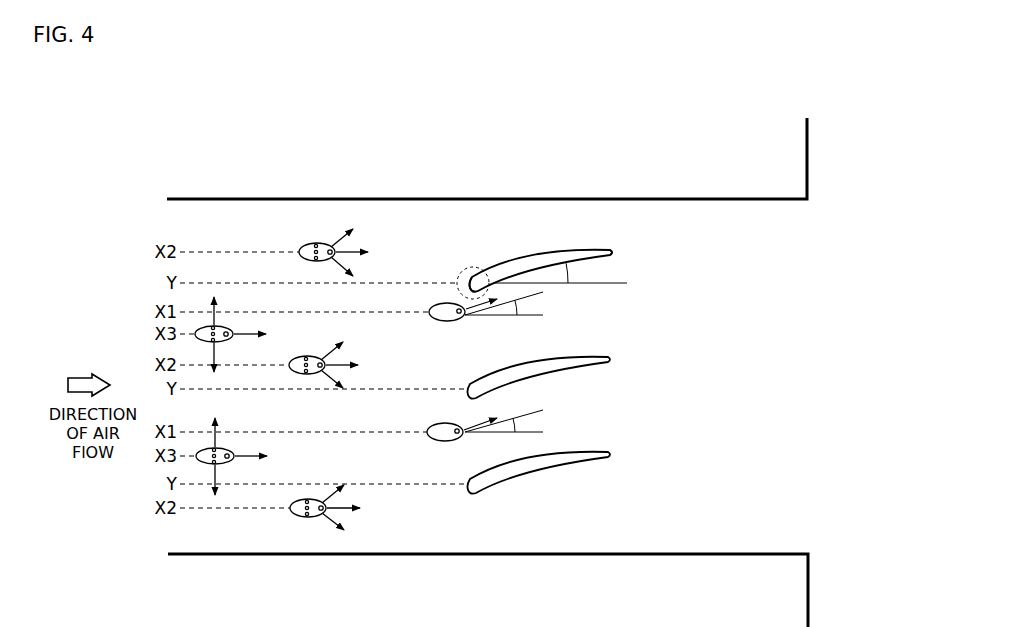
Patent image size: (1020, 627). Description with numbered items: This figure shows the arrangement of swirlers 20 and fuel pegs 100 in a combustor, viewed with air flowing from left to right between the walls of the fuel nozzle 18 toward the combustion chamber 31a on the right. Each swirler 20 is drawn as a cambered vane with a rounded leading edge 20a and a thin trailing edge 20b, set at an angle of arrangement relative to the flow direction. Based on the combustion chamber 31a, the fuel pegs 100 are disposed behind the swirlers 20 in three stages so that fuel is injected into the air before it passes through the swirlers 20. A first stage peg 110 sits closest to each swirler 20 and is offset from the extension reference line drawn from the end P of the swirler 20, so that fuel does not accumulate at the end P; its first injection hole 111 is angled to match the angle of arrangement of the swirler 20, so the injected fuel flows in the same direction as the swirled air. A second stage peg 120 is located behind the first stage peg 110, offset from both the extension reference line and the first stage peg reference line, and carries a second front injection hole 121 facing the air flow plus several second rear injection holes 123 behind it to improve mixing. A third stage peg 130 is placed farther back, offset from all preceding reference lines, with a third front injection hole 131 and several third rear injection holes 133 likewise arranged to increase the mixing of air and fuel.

The fuel nozzle 18 is at (786, 172).
The swirler 20 is at (579, 215).
The leading edge of swirler 20a is at (482, 265).
The trailing edge of swirler 20b is at (611, 254).
The combustion chamber 31a is at (843, 372).
The fuel peg 100 is at (422, 168).
The first stage peg 110 is at (486, 233).
The first injection hole 111 is at (460, 309).
The second stage peg 120 is at (340, 190).
The second front injection hole 121 is at (331, 250).
The second rear injection holes 123 is at (316, 245).
The third stage peg 130 is at (192, 238).
The third front injection hole 131 is at (231, 328).
The third rear injection holes 133 is at (218, 326).
The end of swirler P is at (473, 283).